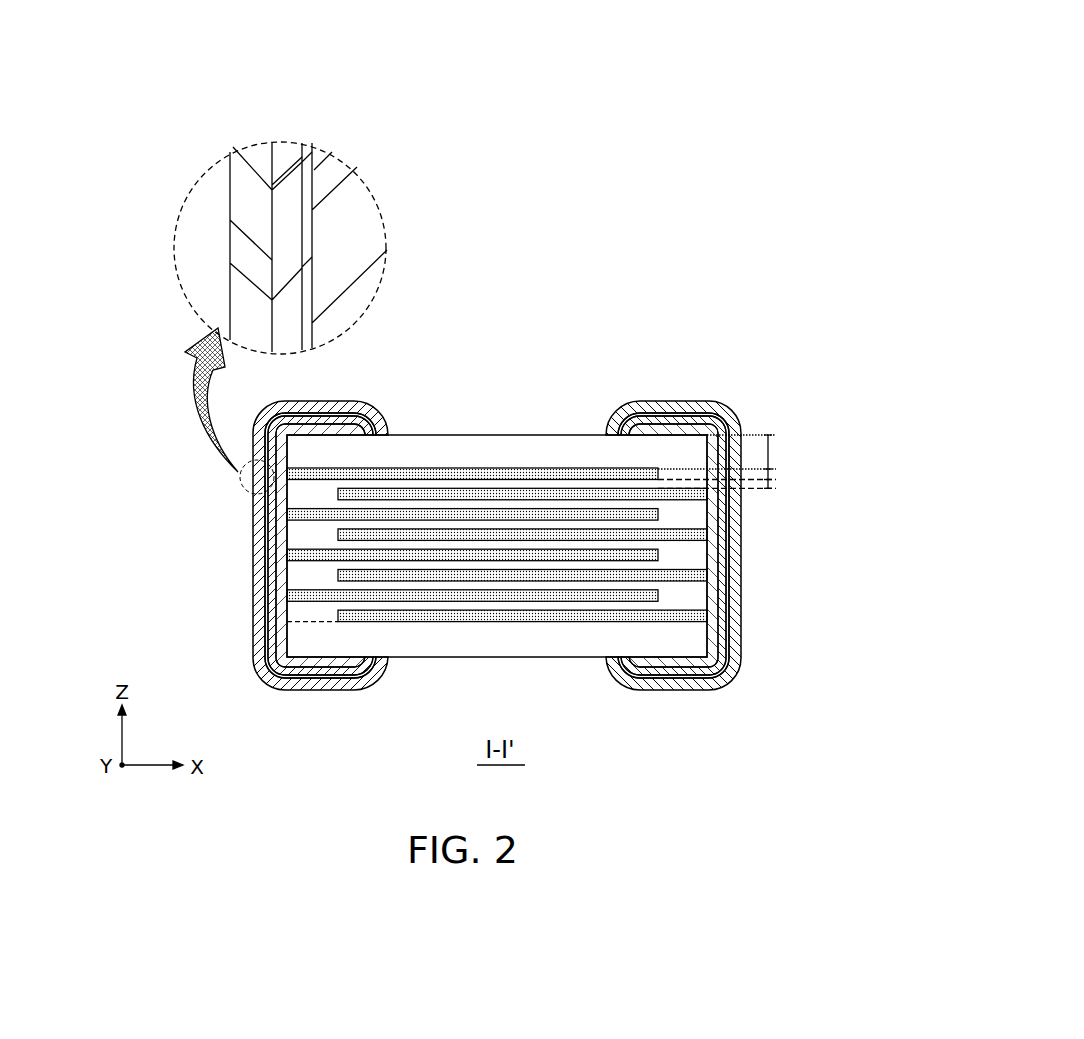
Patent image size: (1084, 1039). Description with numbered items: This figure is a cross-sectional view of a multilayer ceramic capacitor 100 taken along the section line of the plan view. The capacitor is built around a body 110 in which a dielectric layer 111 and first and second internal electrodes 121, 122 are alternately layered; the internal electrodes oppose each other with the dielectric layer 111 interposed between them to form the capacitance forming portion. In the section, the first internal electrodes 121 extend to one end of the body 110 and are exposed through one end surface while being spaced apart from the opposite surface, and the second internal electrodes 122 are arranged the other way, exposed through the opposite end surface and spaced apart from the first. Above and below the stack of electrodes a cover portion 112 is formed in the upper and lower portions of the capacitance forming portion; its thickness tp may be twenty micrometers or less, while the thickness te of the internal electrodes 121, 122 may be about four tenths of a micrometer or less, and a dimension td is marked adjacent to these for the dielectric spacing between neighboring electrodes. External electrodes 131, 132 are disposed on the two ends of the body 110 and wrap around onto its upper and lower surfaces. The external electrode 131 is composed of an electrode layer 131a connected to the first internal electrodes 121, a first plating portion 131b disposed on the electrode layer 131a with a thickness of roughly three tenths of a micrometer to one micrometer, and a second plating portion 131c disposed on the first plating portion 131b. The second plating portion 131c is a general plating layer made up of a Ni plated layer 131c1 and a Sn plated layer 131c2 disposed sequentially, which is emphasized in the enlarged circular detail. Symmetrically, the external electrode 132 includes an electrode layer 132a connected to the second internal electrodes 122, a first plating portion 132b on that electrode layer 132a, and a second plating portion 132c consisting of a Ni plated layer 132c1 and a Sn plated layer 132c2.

The multilayer ceramic capacitor 100 is at (470, 328).
The body 110 is at (580, 434).
The dielectric layer 111 is at (397, 484).
The cover portion 112 is at (533, 452).
The first internal electrode 121 is at (488, 473).
The second internal electrode 122 is at (436, 492).
The external electrode 131 is at (108, 522).
The electrode layer 131a is at (256, 526).
The first plating portion 131b is at (258, 571).
The second plating portion 131c is at (172, 607).
The Ni plated layer 131c1 is at (269, 614).
The Sn plated layer 131c2 is at (262, 661).
The external electrode 132 is at (886, 515).
The electrode layer 132a is at (734, 537).
The first plating portion 132b is at (733, 583).
The second plating portion 132c is at (823, 607).
The Ni plated layer 132c1 is at (740, 620).
The Sn plated layer 132c2 is at (743, 651).
The thickness of the cover portion tp is at (770, 452).
The thickness of the internal electrodes te is at (770, 473).
The dielectric layer thickness td is at (770, 481).